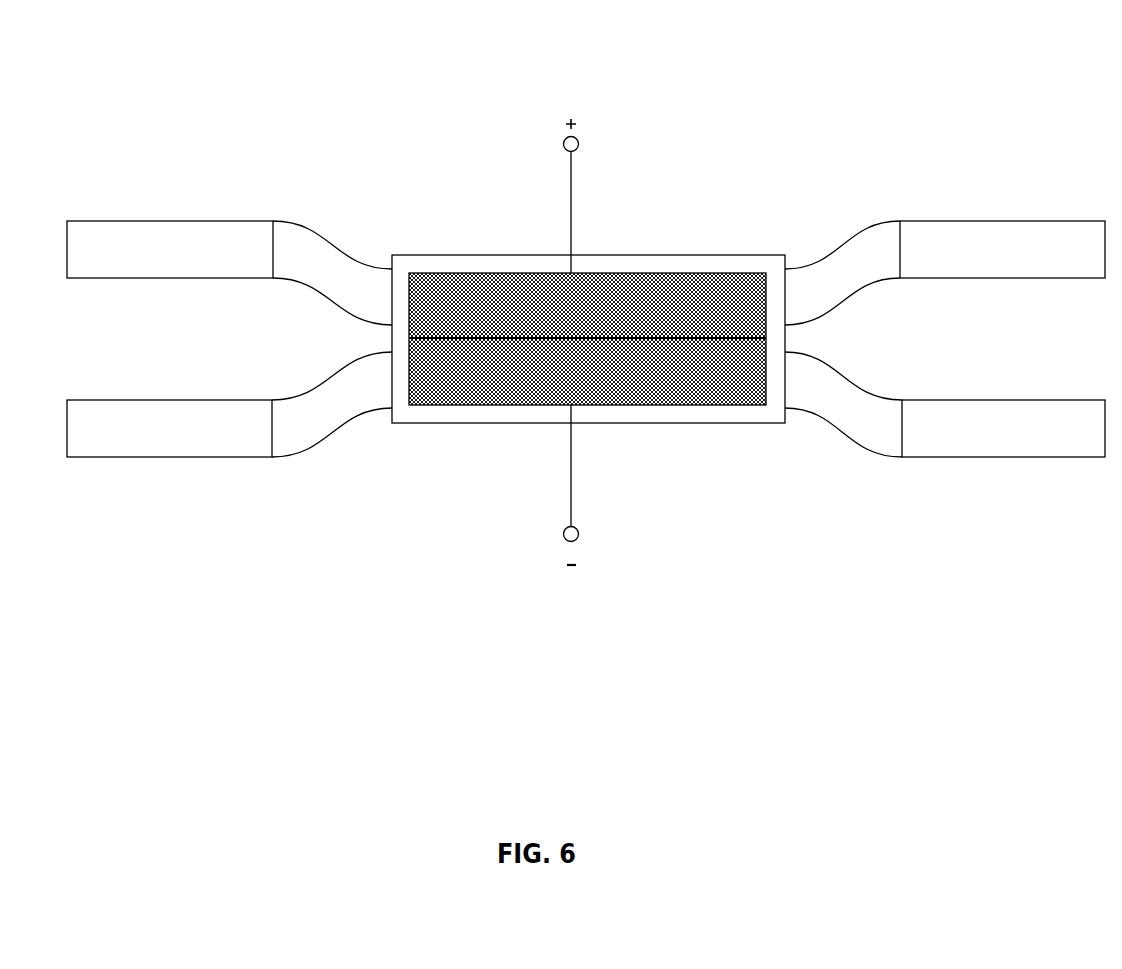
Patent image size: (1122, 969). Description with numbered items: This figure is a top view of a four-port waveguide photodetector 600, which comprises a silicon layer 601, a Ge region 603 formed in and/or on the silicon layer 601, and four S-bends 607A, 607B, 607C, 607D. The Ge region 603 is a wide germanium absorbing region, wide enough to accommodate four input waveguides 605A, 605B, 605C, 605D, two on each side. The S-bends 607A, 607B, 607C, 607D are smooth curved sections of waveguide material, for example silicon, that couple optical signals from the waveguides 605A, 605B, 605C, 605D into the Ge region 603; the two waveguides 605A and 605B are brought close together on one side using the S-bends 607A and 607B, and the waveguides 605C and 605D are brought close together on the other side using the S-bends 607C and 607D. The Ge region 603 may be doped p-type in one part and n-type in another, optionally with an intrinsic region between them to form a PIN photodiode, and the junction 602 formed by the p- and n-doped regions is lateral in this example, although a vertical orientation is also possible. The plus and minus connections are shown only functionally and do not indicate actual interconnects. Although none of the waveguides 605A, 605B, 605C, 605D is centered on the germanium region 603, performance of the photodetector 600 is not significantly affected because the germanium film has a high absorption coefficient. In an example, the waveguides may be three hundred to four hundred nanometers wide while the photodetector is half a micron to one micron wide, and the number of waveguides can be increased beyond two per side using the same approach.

The four-port waveguide photodetector 600 is at (416, 120).
The silicon layer 601 is at (621, 262).
The junction 602 is at (766, 338).
The Ge region 603 is at (710, 272).
The input waveguide 605A is at (170, 249).
The input waveguide 605B is at (169, 428).
The input waveguide 605C is at (1002, 249).
The input waveguide 605D is at (1003, 428).
The S-bend 607A is at (343, 258).
The S-bend 607B is at (335, 425).
The S-bend 607C is at (853, 233).
The S-bend 607D is at (835, 423).